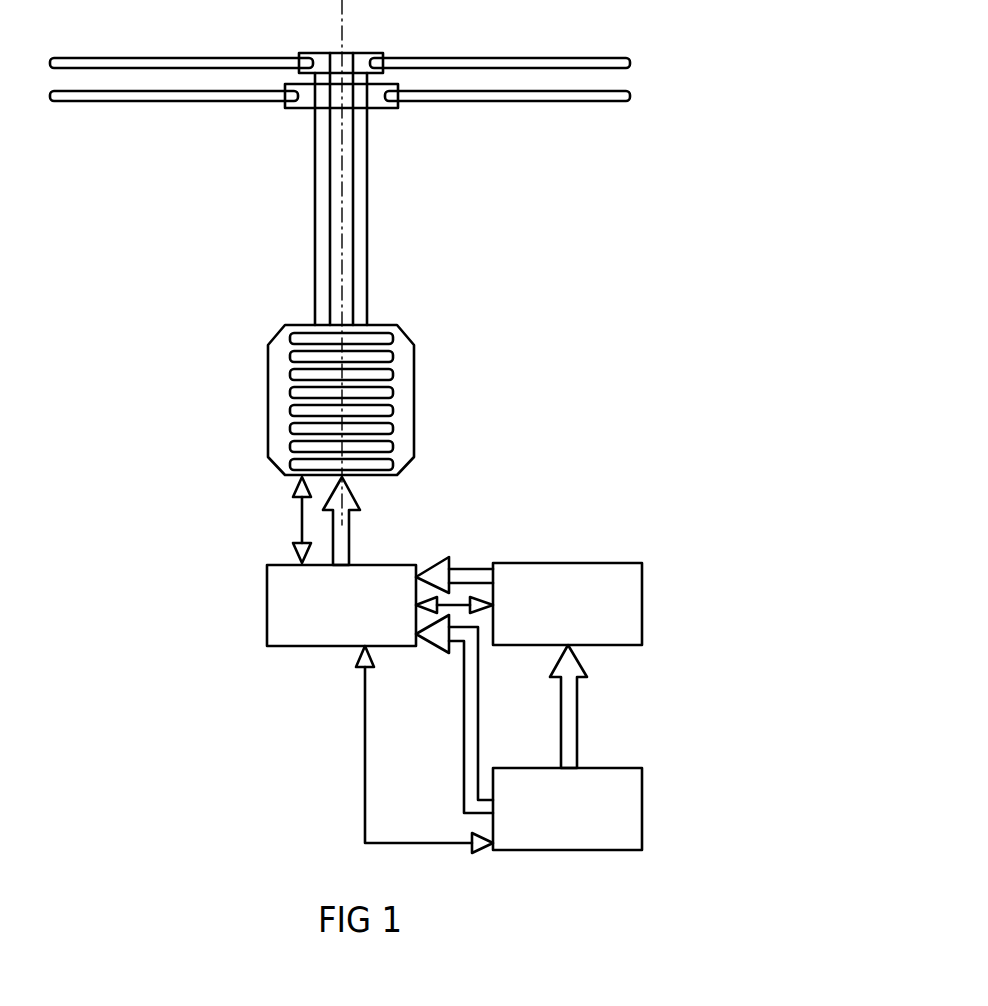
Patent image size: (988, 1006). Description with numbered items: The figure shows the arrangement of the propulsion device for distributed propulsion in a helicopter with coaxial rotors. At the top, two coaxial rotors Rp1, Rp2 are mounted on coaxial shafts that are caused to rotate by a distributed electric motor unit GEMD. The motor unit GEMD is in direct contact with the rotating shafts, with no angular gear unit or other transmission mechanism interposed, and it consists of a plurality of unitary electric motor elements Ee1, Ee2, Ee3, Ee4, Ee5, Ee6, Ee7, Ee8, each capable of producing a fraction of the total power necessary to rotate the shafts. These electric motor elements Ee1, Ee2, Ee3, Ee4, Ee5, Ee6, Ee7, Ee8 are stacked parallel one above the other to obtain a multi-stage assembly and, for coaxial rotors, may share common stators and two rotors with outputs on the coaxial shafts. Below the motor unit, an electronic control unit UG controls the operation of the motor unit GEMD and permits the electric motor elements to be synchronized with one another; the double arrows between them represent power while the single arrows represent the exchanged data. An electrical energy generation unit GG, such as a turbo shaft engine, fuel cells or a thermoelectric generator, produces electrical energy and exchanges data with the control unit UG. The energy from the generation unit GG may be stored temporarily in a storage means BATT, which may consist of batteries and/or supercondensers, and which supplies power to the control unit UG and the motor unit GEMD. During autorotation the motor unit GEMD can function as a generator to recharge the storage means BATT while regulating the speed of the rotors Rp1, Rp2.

The coaxial rotor Rp1 is at (349, 200).
The coaxial rotor Rp2 is at (364, 248).
The distributed electric motor unit GEMD is at (399, 325).
The electric motor element Ee1 is at (289, 338).
The electric motor element Ee2 is at (393, 356).
The electric motor element Ee3 is at (289, 374).
The electric motor element Ee4 is at (393, 392).
The electric motor element Ee5 is at (289, 410).
The electric motor element Ee6 is at (393, 428).
The electric motor element Ee7 is at (289, 446).
The electric motor element Ee8 is at (393, 464).
The electronic control unit UG is at (343, 647).
The storage means BATT is at (642, 602).
The electrical energy generation unit GG is at (642, 807).